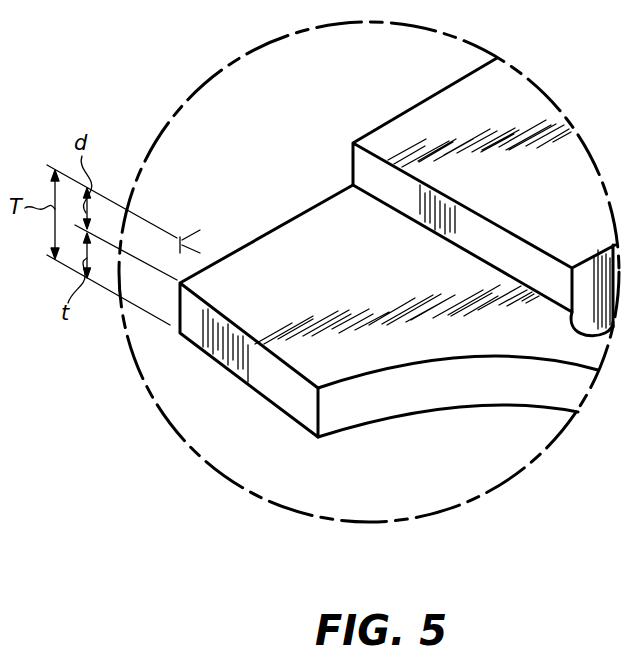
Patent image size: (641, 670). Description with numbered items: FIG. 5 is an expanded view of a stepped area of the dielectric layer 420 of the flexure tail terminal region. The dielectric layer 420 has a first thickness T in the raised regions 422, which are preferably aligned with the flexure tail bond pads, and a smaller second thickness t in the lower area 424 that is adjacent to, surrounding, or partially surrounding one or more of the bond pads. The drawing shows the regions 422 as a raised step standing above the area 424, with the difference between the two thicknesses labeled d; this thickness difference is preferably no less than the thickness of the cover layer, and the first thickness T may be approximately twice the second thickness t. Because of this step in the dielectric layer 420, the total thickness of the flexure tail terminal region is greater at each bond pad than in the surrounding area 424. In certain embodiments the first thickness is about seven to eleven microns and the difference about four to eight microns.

The dielectric layer 420 is at (537, 273).
The regions of first thickness 422 is at (407, 132).
The area of second thickness 424 is at (295, 237).